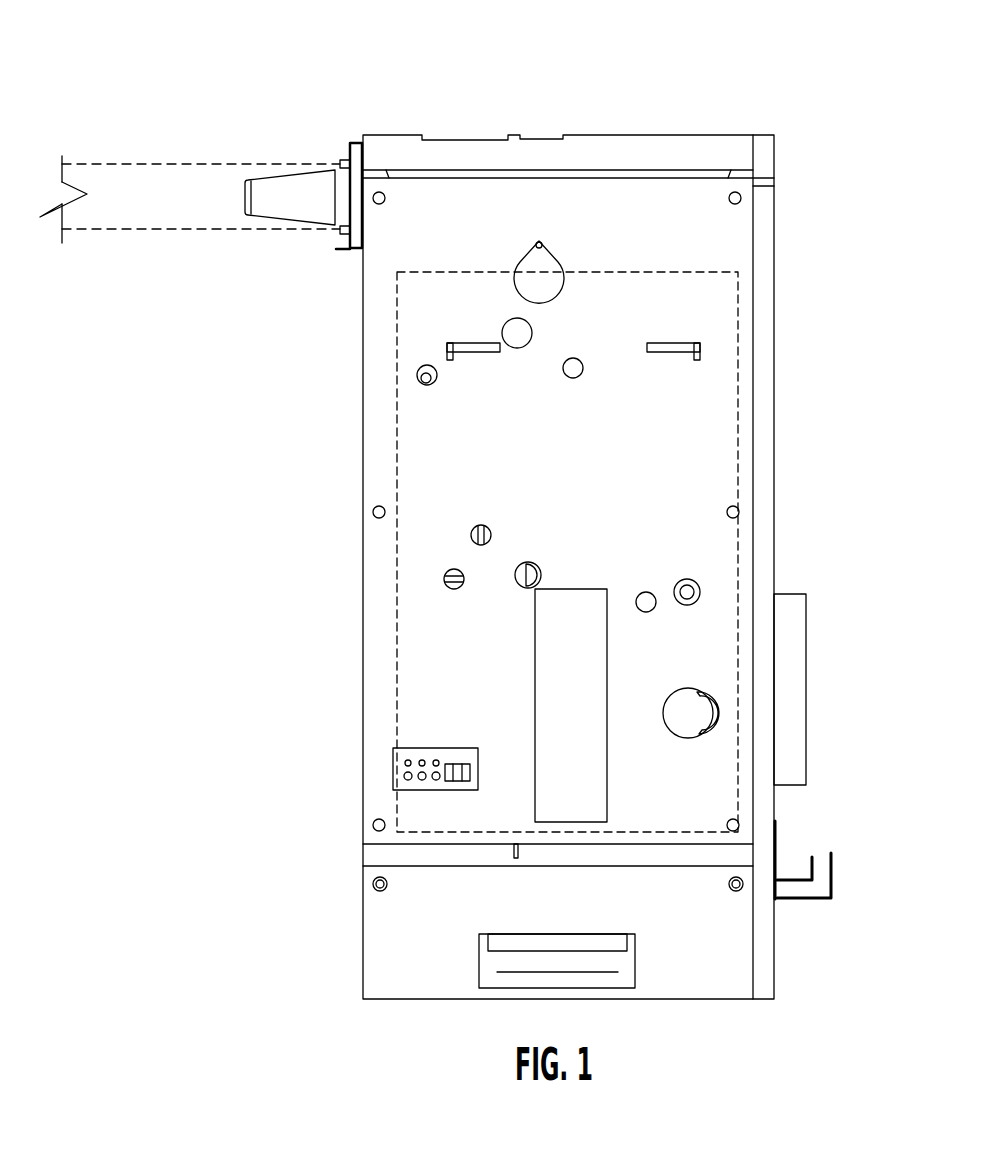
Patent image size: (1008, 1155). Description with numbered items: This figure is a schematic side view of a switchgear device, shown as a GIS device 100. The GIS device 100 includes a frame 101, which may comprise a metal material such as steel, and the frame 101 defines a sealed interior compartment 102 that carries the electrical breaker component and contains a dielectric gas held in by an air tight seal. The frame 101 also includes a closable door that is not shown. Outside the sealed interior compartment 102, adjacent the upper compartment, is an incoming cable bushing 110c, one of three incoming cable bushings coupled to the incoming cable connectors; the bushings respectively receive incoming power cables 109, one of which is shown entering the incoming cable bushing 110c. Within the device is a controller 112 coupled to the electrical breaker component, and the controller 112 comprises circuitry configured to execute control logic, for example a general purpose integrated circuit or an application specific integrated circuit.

The GIS device 100 is at (832, 128).
The frame 101 is at (765, 503).
The sealed interior compartment 102 is at (396, 452).
The incoming power cable 109 is at (200, 160).
The incoming cable bushing 110c is at (302, 185).
The controller 112 is at (571, 822).